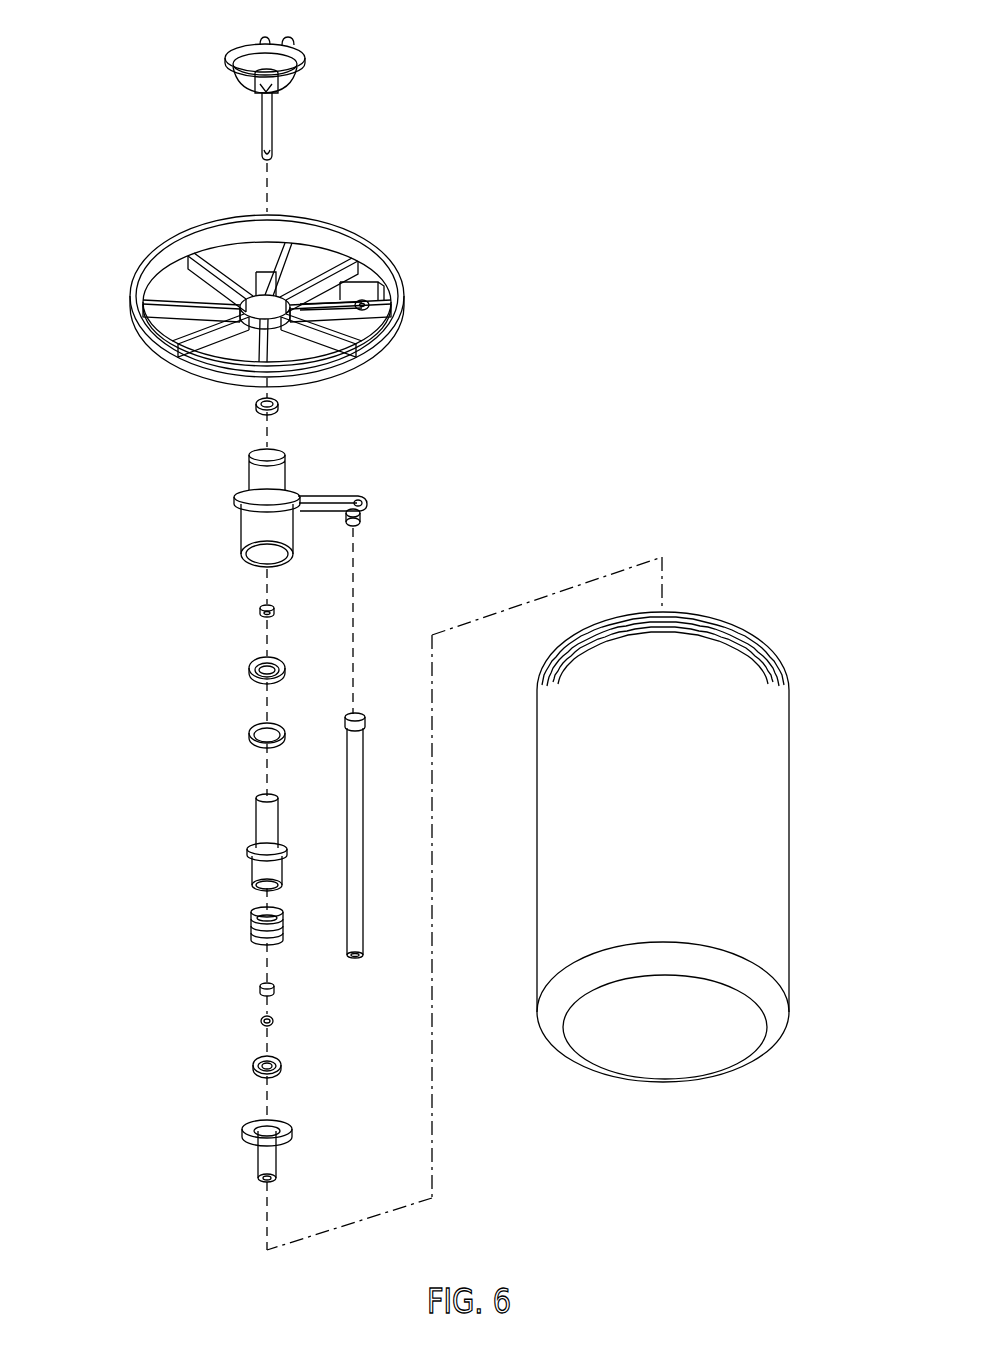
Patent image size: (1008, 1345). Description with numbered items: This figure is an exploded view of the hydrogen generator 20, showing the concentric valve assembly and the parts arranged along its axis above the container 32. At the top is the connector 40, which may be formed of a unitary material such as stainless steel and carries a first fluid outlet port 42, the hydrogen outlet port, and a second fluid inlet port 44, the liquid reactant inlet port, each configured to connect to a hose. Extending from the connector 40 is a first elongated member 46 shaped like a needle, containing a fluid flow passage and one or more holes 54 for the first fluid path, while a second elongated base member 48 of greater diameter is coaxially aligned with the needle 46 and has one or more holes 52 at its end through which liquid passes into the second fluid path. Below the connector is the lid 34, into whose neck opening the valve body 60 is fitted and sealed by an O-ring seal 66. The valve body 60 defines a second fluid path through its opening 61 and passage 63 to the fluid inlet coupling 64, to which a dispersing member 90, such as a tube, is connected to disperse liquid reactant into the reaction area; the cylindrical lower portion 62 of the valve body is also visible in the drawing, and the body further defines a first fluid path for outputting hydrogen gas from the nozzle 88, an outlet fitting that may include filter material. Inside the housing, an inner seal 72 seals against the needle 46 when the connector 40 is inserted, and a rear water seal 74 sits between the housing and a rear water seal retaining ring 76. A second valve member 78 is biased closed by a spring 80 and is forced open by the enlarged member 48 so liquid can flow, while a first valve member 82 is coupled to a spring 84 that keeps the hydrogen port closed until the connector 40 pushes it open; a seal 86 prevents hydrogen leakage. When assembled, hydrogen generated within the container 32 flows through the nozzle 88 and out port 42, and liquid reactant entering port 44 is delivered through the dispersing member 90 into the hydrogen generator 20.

The hydrogen generator 20 is at (735, 125).
The container 32 is at (780, 790).
The lid 34 is at (165, 233).
The connector 40 is at (212, 49).
The first fluid outlet port 42 is at (263, 40).
The second fluid inlet port 44 is at (292, 40).
The first elongated member 46 is at (273, 125).
The second elongated base member 48 is at (278, 82).
The holes 52 is at (262, 92).
The holes 54 is at (264, 150).
The valve body 60 is at (235, 470).
The opening 61 is at (286, 481).
The cylinder 62 is at (260, 527).
The passage 63 is at (265, 316).
The fluid inlet coupling 64 is at (361, 523).
The O-ring seal 66 is at (280, 403).
The inner seal 72 is at (275, 607).
The rear water seal 74 is at (250, 666).
The rear water seal retaining ring 76 is at (250, 732).
The second valve member 78 is at (268, 827).
The spring 80 is at (250, 922).
The first valve member 82 is at (259, 989).
The spring 84 is at (260, 1021).
The seal 86 is at (255, 1065).
The nozzle 88 is at (248, 1127).
The dispersing member 90 is at (357, 841).